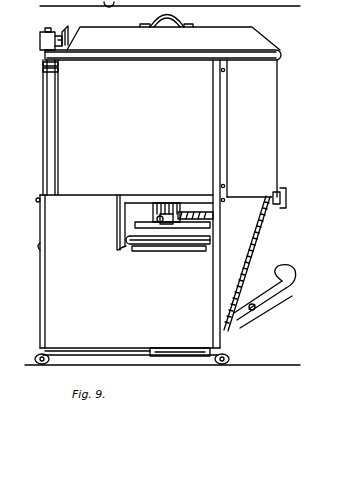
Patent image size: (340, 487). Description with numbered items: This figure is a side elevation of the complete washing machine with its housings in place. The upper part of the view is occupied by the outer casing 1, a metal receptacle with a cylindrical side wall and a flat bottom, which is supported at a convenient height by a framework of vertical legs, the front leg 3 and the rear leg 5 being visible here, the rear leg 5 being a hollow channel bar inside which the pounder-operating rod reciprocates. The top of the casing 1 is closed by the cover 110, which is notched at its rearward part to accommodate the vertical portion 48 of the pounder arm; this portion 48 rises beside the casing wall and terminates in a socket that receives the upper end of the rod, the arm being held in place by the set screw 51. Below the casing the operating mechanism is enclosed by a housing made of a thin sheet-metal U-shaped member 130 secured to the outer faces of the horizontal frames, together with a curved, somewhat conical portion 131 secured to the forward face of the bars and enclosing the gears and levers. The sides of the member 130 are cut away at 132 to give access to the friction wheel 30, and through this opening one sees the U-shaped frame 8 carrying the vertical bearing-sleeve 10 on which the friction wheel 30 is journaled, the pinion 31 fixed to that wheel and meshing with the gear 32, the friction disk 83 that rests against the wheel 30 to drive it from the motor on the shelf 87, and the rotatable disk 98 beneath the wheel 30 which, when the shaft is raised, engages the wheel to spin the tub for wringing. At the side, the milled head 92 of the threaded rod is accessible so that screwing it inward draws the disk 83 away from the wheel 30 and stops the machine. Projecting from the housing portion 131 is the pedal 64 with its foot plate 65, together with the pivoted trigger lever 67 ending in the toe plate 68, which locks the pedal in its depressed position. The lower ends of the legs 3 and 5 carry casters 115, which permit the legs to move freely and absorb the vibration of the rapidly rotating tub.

The outer casing 1 is at (265, 115).
The leg 3 is at (222, 150).
The rear leg 5 is at (52, 188).
The U-shaped frame 8 is at (136, 199).
The bearing-sleeve 10 is at (178, 200).
The friction wheel 30 is at (140, 236).
The pinion 31 is at (160, 218).
The gear 32 is at (195, 210).
The vertical portion of arm 48 is at (46, 31).
The set screw 51 is at (68, 31).
The pedal 64 is at (270, 306).
The foot plate 65 is at (286, 268).
The trigger lever 67 is at (242, 322).
The toe plate 68 is at (252, 304).
The friction disk 83 is at (188, 225).
The shelf 87 is at (186, 357).
The milled head 92 is at (282, 202).
The rotatable disk 98 is at (147, 251).
The cover 110 is at (252, 40).
The casters 115 is at (42, 364).
The U-shaped housing member 130 is at (162, 280).
The curved housing portion 131 is at (252, 228).
The cut-away 132 is at (118, 248).